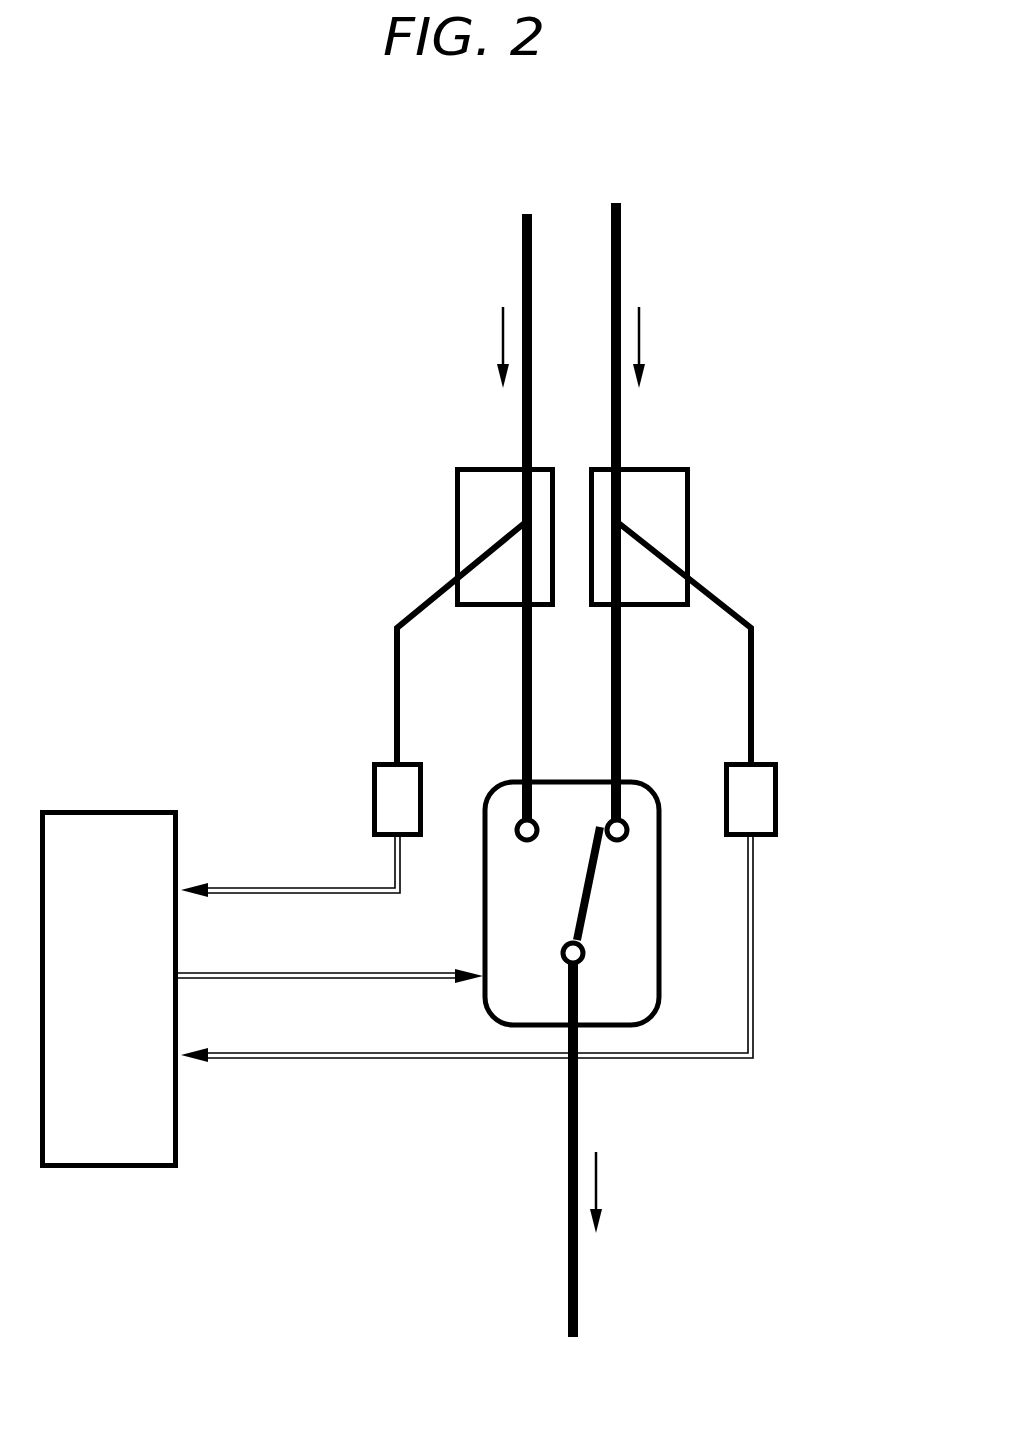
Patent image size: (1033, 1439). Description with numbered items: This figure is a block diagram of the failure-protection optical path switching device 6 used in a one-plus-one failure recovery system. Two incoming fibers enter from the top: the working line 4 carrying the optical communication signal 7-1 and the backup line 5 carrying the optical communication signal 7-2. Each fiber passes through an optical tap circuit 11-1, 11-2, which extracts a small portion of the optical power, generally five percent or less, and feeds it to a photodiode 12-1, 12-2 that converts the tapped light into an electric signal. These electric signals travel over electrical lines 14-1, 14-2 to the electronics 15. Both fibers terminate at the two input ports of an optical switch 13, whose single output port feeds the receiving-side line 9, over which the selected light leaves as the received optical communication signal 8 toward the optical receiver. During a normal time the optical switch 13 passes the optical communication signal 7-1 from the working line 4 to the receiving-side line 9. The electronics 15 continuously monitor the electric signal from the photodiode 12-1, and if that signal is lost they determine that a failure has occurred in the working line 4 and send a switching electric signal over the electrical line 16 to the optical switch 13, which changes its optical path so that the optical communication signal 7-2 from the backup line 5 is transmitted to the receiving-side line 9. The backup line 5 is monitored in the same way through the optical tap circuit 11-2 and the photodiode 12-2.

The working line 4 is at (621, 222).
The backup line 5 is at (523, 227).
The failure-protection optical path switching device 6 is at (746, 1100).
The optical communication signal 7-1 is at (641, 338).
The optical communication signal 7-2 is at (502, 336).
The received optical communication signal 8 is at (598, 1178).
The receiving-side line 9 is at (566, 1193).
The optical tap circuit 11-1 is at (680, 517).
The optical tap circuit 11-2 is at (470, 517).
The photodiode 12-1 is at (762, 798).
The photodiode 12-2 is at (385, 783).
The optical switch 13 is at (645, 925).
The electrical line 14-1 is at (318, 1061).
The electrical line 14-2 is at (280, 887).
The electronics 15 is at (110, 1170).
The electrical line 16 is at (258, 980).